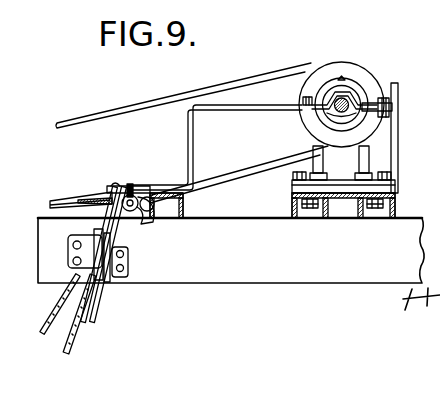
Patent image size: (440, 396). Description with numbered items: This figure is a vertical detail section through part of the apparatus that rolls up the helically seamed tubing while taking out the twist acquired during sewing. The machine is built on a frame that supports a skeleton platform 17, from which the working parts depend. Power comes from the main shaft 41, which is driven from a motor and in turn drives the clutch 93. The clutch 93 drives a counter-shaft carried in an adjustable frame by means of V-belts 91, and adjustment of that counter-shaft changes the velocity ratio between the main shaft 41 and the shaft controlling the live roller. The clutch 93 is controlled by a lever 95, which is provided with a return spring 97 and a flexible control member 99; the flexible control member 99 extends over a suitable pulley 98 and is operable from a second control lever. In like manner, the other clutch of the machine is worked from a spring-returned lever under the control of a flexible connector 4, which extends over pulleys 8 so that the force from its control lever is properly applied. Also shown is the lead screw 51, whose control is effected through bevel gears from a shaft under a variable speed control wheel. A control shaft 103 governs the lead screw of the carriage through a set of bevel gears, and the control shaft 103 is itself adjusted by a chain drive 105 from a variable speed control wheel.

The flexible connector 4 is at (84, 298).
The pulleys 8 is at (93, 232).
The skeleton platform 17 is at (184, 207).
The main shaft 41 is at (340, 106).
The lead screw 51 is at (60, 199).
The V-belts 91 is at (162, 100).
The clutch 93 is at (333, 75).
The lever 95 is at (193, 142).
The return spring 97 is at (131, 186).
The pulley 98 is at (110, 259).
The flexible control member 99 is at (111, 196).
The control shaft 103 is at (141, 222).
The chain drive 105 is at (84, 331).